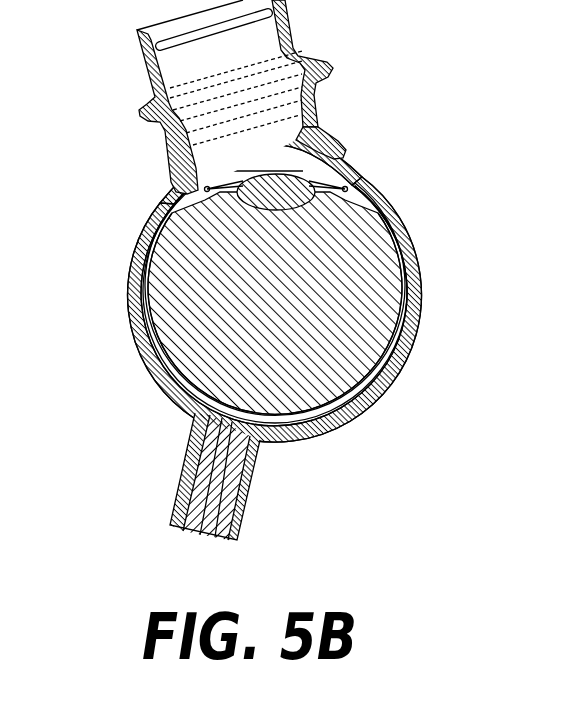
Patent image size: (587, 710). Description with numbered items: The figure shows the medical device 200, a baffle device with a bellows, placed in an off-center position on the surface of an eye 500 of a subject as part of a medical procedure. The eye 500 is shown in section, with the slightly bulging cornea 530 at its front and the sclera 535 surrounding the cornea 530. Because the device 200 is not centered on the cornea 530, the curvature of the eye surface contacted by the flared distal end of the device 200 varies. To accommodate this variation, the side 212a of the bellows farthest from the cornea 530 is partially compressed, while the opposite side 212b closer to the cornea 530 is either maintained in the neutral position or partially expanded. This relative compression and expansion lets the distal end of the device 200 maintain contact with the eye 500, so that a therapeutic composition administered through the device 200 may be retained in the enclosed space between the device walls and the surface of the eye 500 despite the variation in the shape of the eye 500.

The medical device 200 is at (205, 97).
The side of the bellows farthest from the cornea 212a is at (146, 122).
The opposite side of the bellows closer to the cornea 212b is at (328, 68).
The eye 500 is at (412, 430).
The cornea 530 is at (300, 128).
The sclera 535 is at (165, 197).